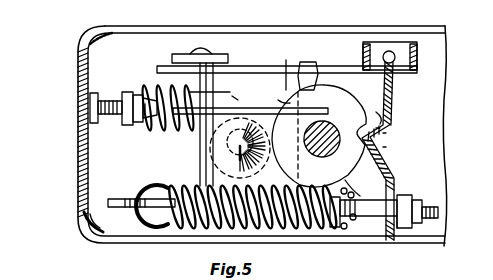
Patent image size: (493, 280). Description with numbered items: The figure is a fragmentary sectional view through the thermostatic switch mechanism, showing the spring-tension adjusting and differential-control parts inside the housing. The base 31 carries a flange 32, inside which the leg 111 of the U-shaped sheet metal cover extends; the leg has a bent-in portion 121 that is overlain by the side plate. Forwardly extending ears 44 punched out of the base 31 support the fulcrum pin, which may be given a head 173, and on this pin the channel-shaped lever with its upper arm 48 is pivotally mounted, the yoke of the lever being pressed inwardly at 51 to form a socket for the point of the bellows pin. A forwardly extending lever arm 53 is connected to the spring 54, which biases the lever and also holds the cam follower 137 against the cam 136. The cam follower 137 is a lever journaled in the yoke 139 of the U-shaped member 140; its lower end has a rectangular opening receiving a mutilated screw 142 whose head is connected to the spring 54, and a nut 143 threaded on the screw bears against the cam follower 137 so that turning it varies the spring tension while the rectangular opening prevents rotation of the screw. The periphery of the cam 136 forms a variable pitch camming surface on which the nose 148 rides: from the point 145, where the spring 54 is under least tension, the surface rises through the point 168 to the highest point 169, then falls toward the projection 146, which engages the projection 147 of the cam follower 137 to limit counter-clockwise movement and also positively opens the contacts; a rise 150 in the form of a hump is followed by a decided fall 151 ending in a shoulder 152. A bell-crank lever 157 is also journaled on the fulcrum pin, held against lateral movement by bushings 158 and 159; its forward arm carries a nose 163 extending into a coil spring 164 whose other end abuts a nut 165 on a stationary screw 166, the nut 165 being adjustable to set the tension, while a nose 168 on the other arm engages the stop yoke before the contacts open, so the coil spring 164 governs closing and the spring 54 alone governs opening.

The base 31 is at (440, 77).
The flange 32 is at (83, 183).
The leg 111 is at (88, 88).
The ears 44 is at (175, 56).
The head 173 is at (207, 46).
The cam 136 is at (330, 90).
The nut 165 is at (118, 106).
The coil spring 164 is at (142, 93).
The stationary screw 166 is at (113, 120).
The nose 163 is at (166, 120).
The bushing 158 is at (215, 90).
The rise 150 is at (235, 101).
The pressed-in socket 51 is at (237, 163).
The bell-crank lever 157 is at (296, 100).
The nose 168 is at (298, 186).
The projection 146 is at (312, 66).
The highest point of cam 169 is at (287, 103).
The upper arm 48 is at (284, 62).
The yoke 139 is at (408, 48).
The U-shaped member 140 is at (424, 60).
The cam follower 137 is at (393, 100).
The shoulder 152 is at (382, 118).
The fall 151 is at (378, 127).
The projection 147 is at (384, 133).
The nose 148 is at (384, 147).
The point 145 is at (362, 172).
The mutilated screw 142 is at (423, 210).
The nut 143 is at (414, 222).
The spring 54 is at (192, 229).
The lever arm 53 is at (113, 200).
The bushing 159 is at (188, 156).
The bent-in portion 121 is at (95, 232).